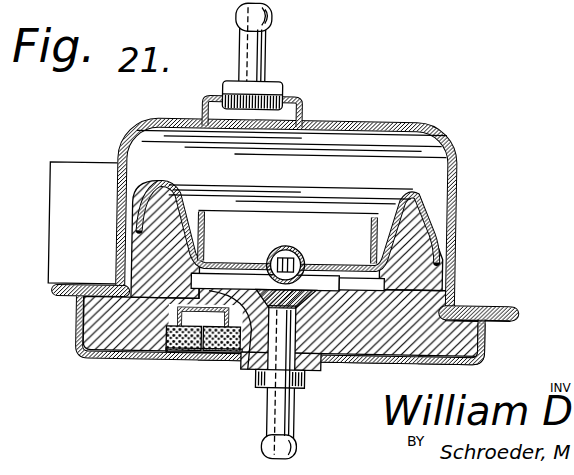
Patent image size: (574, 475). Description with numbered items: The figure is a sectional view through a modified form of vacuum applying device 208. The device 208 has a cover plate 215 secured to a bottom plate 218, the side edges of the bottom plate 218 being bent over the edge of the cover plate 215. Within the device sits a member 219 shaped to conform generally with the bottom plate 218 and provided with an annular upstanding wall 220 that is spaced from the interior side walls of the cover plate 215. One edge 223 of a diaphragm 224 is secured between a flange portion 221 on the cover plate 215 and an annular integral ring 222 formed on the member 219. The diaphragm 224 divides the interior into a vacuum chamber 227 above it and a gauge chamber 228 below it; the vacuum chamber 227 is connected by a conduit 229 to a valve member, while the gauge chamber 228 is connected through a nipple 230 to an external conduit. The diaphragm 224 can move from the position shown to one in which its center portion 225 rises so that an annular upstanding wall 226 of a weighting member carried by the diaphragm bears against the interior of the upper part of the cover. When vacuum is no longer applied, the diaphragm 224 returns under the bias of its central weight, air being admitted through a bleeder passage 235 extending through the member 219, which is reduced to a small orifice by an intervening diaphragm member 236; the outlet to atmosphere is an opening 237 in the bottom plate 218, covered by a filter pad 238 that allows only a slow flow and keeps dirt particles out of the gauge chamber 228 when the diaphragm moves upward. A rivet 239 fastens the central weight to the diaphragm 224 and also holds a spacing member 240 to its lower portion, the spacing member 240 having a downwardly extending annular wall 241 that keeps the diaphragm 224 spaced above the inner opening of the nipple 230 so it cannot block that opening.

The vacuum applying device 208 is at (446, 118).
The cover plate 215 is at (456, 143).
The bottom plate 218 is at (414, 360).
The member 219 is at (115, 361).
The annular upstanding wall 220 is at (434, 238).
The flange portion 221 is at (474, 302).
The annular integral ring 222 is at (490, 348).
The edge of diaphragm 223 is at (496, 326).
The diaphragm 224 is at (391, 212).
The center portion of diaphragm 225 is at (277, 212).
The annular upstanding wall of weighting member 226 is at (208, 228).
The vacuum chamber 227 is at (335, 146).
The gauge chamber 228 is at (189, 282).
The conduit 229 is at (259, 45).
The nipple 230 is at (274, 420).
The bleeder passage 235 is at (252, 373).
The diaphragm member 236 is at (176, 309).
The opening 237 is at (195, 360).
The filter pad 238 is at (207, 350).
The rivet 239 is at (284, 249).
The spacing member 240 is at (321, 262).
The downwardly extending annular wall 241 is at (380, 280).